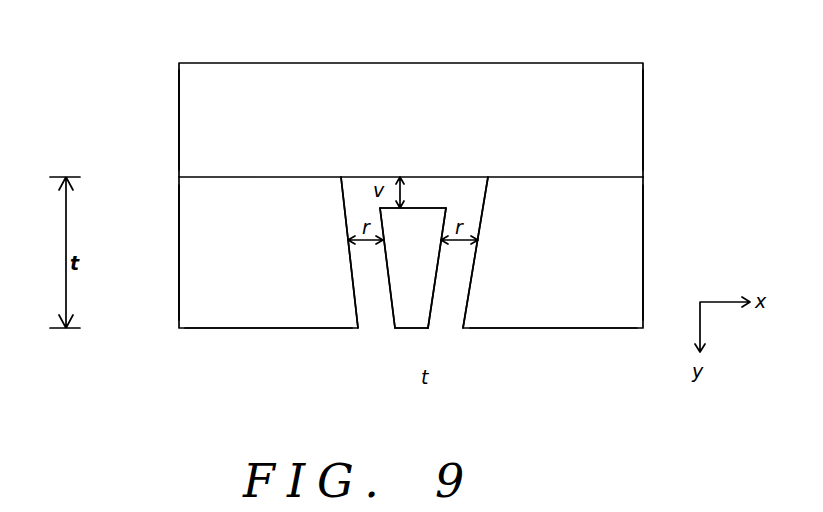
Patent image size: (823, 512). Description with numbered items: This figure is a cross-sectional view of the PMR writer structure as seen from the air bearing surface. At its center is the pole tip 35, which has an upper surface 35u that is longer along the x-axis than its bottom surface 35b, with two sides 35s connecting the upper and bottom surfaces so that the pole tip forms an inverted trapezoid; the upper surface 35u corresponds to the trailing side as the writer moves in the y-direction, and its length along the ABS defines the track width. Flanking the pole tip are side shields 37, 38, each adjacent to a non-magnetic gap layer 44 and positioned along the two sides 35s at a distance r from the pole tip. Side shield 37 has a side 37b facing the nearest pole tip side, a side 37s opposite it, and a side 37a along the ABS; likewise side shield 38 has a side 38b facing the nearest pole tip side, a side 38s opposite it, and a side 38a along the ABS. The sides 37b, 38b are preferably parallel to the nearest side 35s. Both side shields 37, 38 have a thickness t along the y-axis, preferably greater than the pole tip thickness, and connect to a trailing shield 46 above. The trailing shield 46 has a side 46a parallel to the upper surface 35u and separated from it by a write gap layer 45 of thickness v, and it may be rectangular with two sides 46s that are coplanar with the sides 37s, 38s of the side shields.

The pole tip 35 is at (405, 312).
The upper surface 35u is at (437, 207).
The sides 35s is at (392, 322).
The bottom surface 35b is at (420, 327).
The side shield 37 is at (267, 312).
The side 37s is at (179, 217).
The side 37a is at (200, 328).
The side 37b is at (355, 282).
The side shield 38 is at (575, 307).
The side 38s is at (643, 213).
The side 38a is at (617, 328).
The side 38b is at (472, 278).
The non-magnetic gap layer 44 is at (362, 217).
The write gap layer 45 is at (427, 192).
The trailing shield 46 is at (627, 108).
The sides 46s is at (179, 127).
The side 46a is at (602, 177).